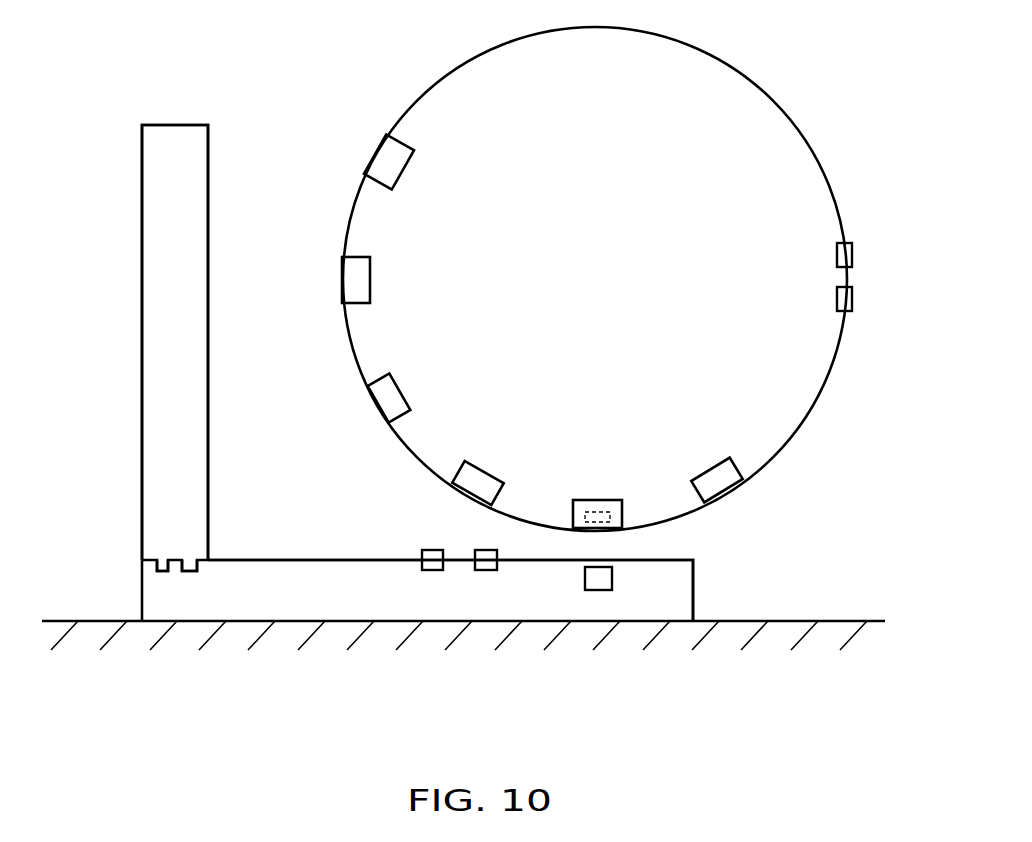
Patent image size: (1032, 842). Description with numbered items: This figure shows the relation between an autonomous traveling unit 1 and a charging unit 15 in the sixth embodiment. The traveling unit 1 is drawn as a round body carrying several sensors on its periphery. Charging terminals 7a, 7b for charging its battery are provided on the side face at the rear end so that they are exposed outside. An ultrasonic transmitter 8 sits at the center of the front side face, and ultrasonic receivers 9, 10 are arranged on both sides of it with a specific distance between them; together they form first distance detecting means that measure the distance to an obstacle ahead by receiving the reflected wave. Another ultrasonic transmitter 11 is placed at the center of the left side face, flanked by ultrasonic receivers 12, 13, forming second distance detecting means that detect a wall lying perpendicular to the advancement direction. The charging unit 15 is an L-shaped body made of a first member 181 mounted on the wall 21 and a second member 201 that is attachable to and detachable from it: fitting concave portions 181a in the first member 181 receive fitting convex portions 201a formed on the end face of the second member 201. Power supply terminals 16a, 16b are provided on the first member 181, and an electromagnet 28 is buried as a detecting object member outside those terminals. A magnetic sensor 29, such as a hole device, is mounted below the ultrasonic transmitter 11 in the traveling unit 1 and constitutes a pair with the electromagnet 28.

The autonomous traveling unit 1 is at (818, 130).
The charging terminal 7a is at (852, 299).
The charging terminal 7b is at (852, 256).
The ultrasonic transmitter 8 is at (350, 283).
The ultrasonic receiver 9 is at (385, 395).
The ultrasonic receiver 10 is at (387, 153).
The ultrasonic transmitter 11 is at (607, 502).
The ultrasonic receiver 12 is at (728, 473).
The ultrasonic receiver 13 is at (467, 472).
The charging unit 15 is at (126, 402).
The power supply terminal 16a is at (425, 552).
The power supply terminal 16b is at (478, 548).
The wall 21 is at (793, 619).
The electromagnet 28 is at (612, 574).
The magnetic sensor 29 is at (587, 502).
The first member 181 is at (693, 560).
The fitting concave portion 181a is at (163, 573).
The second member 201 is at (158, 252).
The fitting convex portion 201a is at (163, 561).